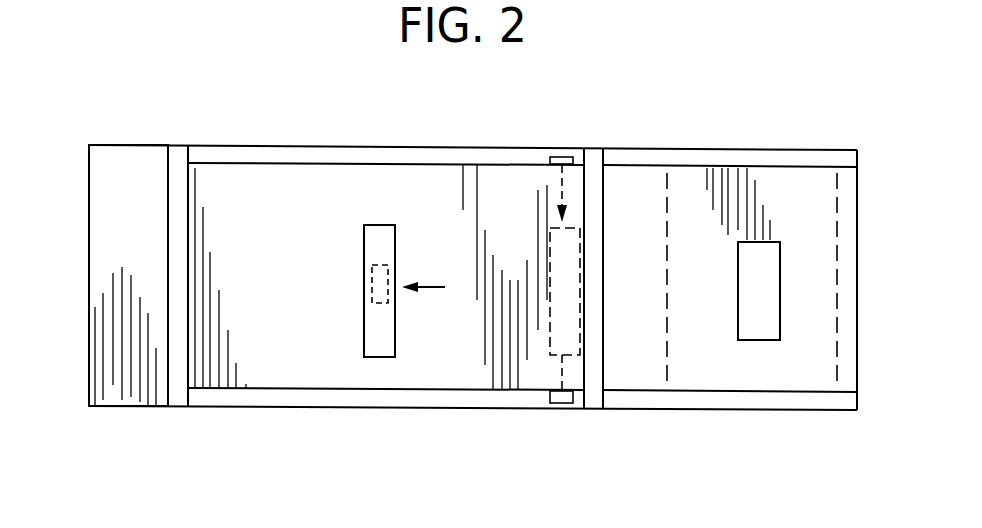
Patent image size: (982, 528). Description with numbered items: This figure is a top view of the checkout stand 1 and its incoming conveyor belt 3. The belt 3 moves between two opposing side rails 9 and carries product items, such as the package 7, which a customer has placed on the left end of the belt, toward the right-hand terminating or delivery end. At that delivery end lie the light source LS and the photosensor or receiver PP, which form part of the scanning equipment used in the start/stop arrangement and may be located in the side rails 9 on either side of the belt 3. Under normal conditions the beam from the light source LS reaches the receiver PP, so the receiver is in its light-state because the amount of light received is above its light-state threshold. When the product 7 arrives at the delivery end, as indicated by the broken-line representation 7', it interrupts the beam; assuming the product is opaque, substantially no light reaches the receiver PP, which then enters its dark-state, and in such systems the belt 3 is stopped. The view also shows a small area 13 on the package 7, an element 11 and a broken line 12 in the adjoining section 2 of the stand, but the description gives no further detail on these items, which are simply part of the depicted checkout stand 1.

The checkout stand 1 is at (80, 298).
The receiver section 2 is at (802, 182).
The incoming conveyor belt 3 is at (386, 285).
The package 7 is at (400, 291).
The broken-line representation of product 7' is at (543, 298).
The side rail 9 is at (427, 158).
The light receiving element 11 is at (765, 295).
The reference line 12 is at (835, 370).
The emitting area 13 is at (376, 274).
The light source LS is at (562, 157).
The photosensor or receiver PP is at (553, 403).